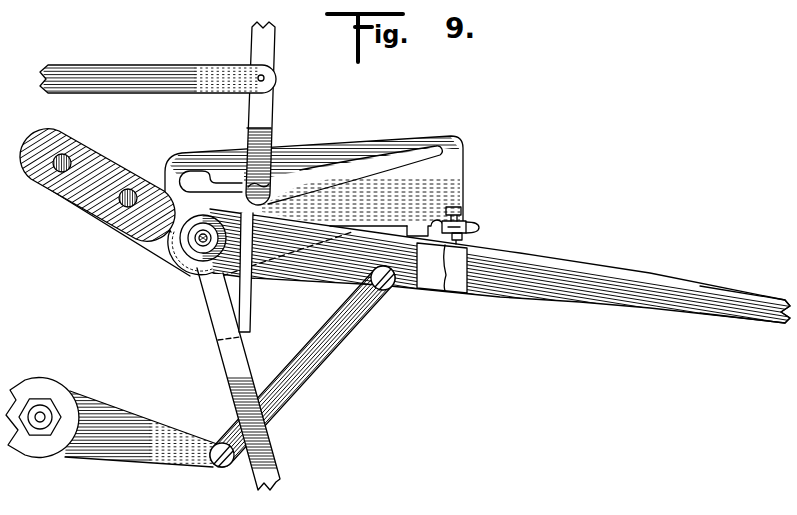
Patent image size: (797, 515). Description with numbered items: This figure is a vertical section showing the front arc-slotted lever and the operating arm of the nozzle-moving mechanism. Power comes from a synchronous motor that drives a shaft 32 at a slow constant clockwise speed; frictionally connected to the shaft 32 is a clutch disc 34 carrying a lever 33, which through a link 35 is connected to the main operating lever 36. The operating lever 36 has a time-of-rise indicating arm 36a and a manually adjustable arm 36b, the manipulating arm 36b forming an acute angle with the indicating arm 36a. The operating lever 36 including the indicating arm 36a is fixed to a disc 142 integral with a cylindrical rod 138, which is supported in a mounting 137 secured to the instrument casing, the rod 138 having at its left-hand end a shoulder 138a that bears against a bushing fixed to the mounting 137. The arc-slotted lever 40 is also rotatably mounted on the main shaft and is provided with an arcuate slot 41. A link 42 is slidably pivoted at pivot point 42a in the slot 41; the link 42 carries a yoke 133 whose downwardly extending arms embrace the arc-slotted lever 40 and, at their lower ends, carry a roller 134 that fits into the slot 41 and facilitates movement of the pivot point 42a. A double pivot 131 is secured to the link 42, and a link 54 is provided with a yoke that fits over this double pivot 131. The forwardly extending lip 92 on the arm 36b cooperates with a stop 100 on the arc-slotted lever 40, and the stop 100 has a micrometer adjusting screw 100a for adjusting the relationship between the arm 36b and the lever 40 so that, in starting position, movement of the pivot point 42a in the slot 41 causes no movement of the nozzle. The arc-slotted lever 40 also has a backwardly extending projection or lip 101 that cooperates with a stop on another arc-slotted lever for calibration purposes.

The link 54 is at (120, 78).
The link 42 is at (252, 30).
The double pivot 131 is at (264, 76).
The yoke 133 is at (258, 135).
The roller 134 is at (240, 172).
The arc-slotted lever 40 is at (359, 150).
The arcuate slot 41 is at (427, 158).
The pivot point 42a is at (267, 164).
The lip 101 is at (414, 232).
The micrometer adjusting screw 100a is at (460, 208).
The stop 100 is at (473, 225).
The main operating lever 36 is at (305, 282).
The manually adjustable arm 36b is at (733, 300).
The time-of-rise indicating arm 36a is at (265, 470).
The lip 92 is at (445, 292).
The link 35 is at (332, 350).
The lever 33 is at (143, 430).
The clutch disc 34 is at (33, 383).
The shaft 32 is at (38, 425).
The mounting 137 is at (77, 198).
The disc 142 is at (182, 235).
The cylindrical rod 138 is at (190, 240).
The shoulder 138a is at (202, 243).